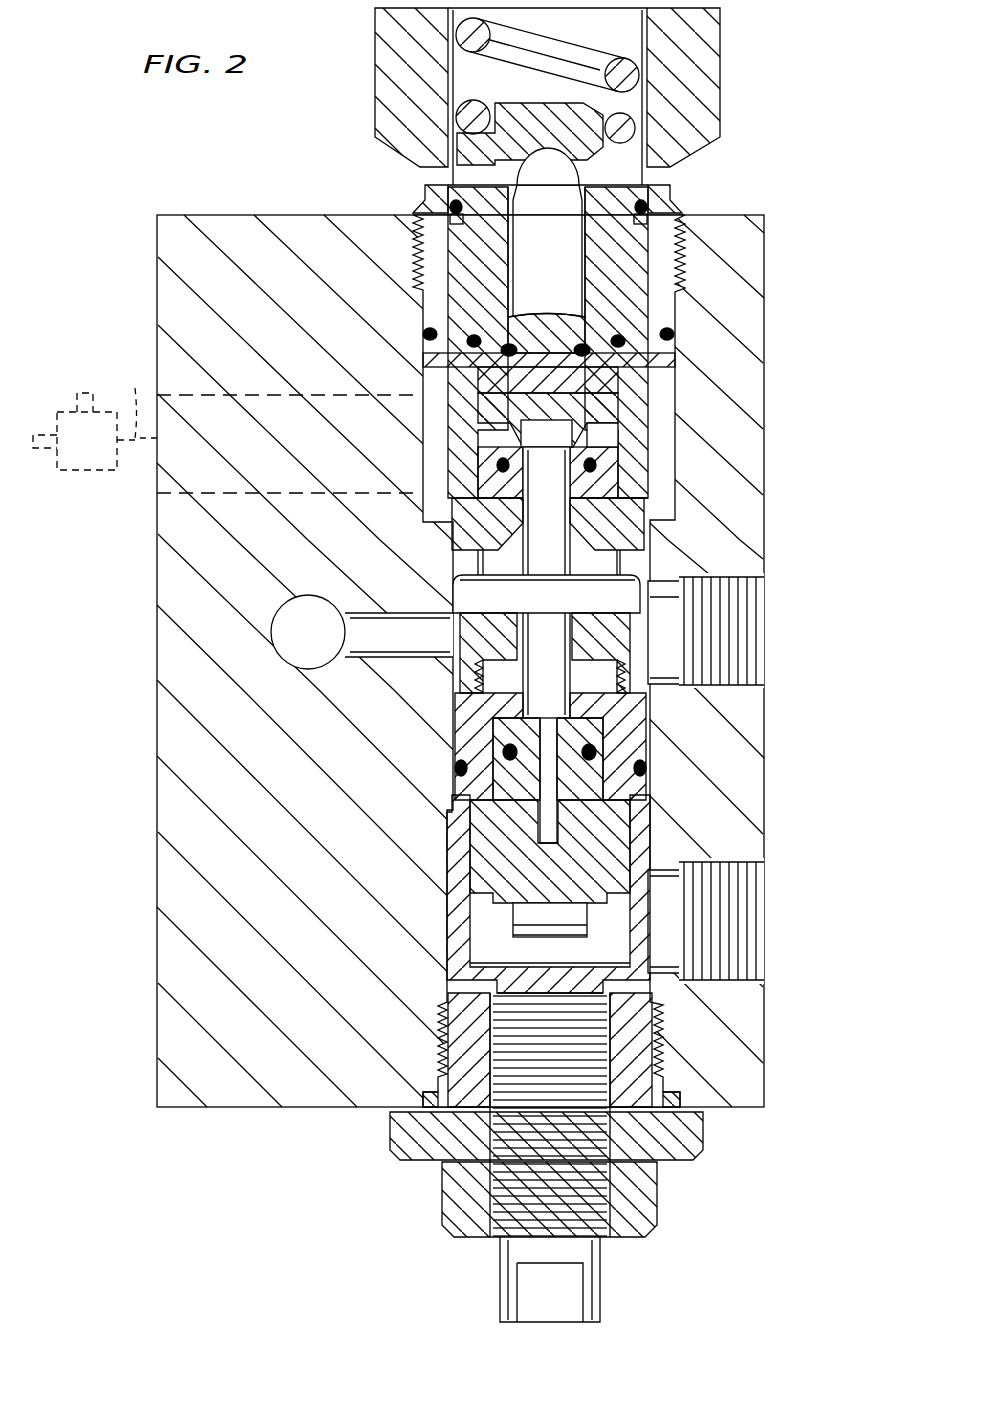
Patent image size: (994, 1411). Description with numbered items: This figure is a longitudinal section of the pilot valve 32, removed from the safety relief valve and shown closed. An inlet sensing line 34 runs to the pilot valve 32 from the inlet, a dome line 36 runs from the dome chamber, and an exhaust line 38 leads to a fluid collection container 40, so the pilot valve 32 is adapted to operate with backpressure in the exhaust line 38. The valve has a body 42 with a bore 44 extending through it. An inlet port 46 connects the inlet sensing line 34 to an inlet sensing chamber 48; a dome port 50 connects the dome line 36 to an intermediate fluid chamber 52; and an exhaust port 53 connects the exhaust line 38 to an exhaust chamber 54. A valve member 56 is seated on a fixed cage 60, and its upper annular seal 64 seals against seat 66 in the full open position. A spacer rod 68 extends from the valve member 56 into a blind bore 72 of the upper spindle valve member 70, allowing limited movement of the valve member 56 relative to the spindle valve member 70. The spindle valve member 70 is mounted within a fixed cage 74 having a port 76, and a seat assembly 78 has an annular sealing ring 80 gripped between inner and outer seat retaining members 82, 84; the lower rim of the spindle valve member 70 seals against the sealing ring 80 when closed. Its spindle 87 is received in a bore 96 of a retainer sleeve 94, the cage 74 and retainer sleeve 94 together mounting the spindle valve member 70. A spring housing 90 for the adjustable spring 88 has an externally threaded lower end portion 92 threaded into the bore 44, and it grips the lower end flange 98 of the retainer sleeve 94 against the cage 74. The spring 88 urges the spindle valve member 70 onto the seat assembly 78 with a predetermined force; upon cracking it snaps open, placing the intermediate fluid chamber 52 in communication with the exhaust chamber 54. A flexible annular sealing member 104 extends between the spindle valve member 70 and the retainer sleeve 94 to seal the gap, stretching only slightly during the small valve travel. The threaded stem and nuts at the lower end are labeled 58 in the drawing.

The pilot valve 32 is at (752, 206).
The inlet sensing line 34 is at (764, 920).
The dome line 36 is at (764, 629).
The exhaust line 38 is at (133, 400).
The fluid collection container 40 is at (85, 473).
The body 42 is at (743, 343).
The bore 44 is at (675, 305).
The inlet port 46 is at (738, 884).
The inlet sensing chamber 48 is at (648, 948).
The dome port 50 is at (740, 605).
The intermediate fluid chamber 52 is at (628, 590).
The exhaust port 53 is at (199, 488).
The exhaust chamber 54 is at (432, 465).
The valve member 56 is at (604, 854).
The threaded stem and nuts 58 is at (546, 1157).
The fixed cage 60 is at (622, 810).
The upper annular seal 64 is at (500, 752).
The seat 66 is at (500, 707).
The spacer rod 68 is at (537, 668).
The upper spindle valve member 70 is at (507, 399).
The blind bore 72 is at (533, 433).
The fixed cage 74 is at (659, 470).
The port 76 is at (600, 445).
The seat assembly 78 is at (475, 560).
The annular sealing ring 80 is at (600, 478).
The inner seat retaining member 82 is at (465, 615).
The outer seat retaining member 84 is at (458, 520).
The spindle 87 is at (575, 213).
The adjustable spring 88 is at (640, 68).
The spring housing 90 is at (720, 108).
The externally threaded lower end portion 92 is at (667, 260).
The retainer sleeve 94 is at (458, 289).
The bore 96 is at (520, 255).
The lower end flange 98 is at (422, 368).
The flexible annular sealing member 104 is at (452, 345).